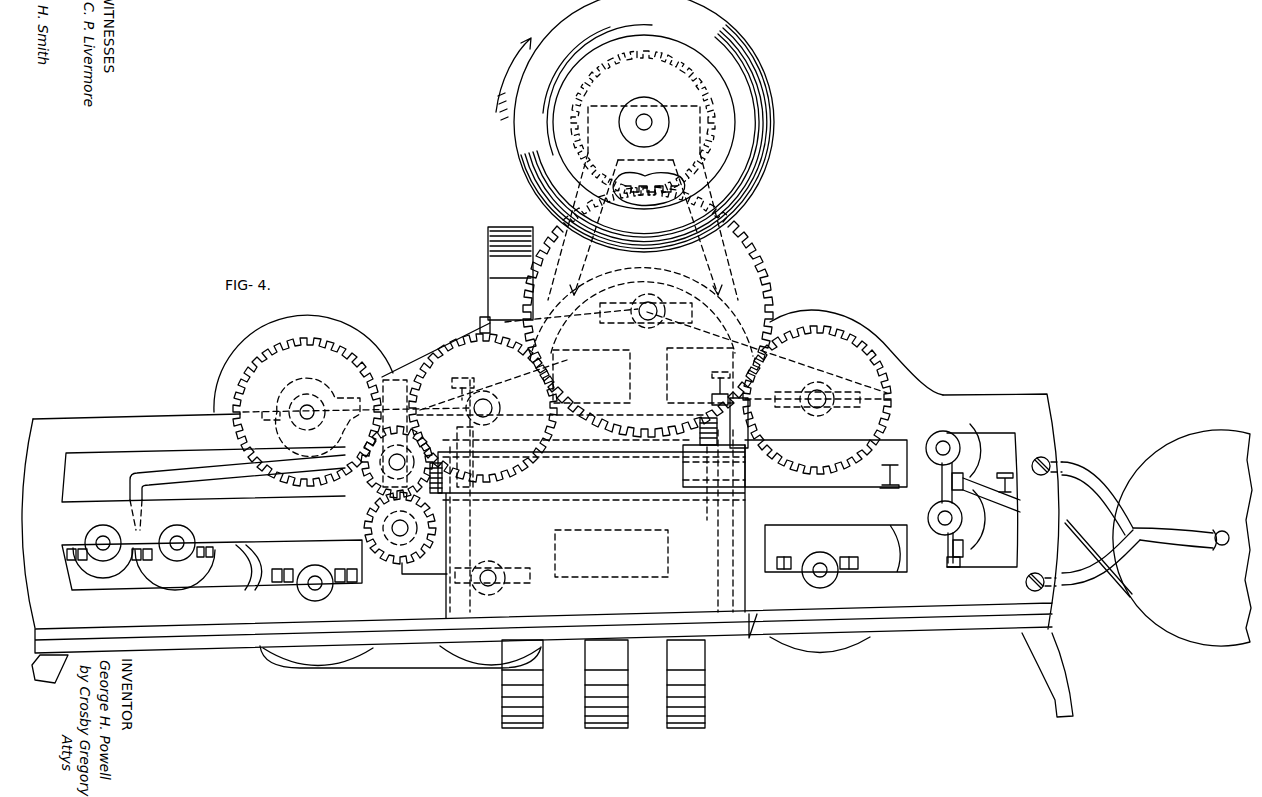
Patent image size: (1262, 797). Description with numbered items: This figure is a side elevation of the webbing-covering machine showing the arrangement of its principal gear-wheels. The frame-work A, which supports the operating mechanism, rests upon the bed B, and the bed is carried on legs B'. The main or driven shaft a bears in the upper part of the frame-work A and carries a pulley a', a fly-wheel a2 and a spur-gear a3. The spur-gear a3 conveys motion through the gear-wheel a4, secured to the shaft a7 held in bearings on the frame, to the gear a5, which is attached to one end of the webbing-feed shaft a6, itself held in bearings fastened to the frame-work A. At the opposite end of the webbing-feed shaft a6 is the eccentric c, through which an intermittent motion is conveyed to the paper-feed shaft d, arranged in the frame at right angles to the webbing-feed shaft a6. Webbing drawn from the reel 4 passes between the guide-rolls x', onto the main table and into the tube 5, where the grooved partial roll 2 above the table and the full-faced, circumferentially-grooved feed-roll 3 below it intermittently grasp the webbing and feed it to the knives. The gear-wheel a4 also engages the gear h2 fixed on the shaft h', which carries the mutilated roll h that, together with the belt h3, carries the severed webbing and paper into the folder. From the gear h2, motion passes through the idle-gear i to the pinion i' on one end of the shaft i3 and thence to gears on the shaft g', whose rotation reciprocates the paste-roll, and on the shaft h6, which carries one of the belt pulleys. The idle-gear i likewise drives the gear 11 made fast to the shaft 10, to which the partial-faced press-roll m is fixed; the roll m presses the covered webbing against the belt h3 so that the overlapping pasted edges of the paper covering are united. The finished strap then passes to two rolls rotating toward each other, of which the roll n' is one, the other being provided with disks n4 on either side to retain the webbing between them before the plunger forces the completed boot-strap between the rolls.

The main or driven shaft a is at (644, 125).
The pulley a' is at (635, 126).
The fly-wheel a2 is at (510, 263).
The spur-gear a3 is at (643, 55).
The gear-wheel a4 is at (770, 290).
The gear a5 is at (805, 396).
The webbing-feed shaft a6 is at (805, 405).
The shaft a7 is at (642, 318).
The partial roll 2 is at (843, 392).
The feed-roll 3 is at (820, 603).
The reel 4 is at (1157, 538).
The tube 5 is at (878, 482).
The shaft 10 is at (299, 407).
The gear 11 is at (356, 358).
The frame-work A is at (542, 468).
The bed B is at (543, 623).
The legs B' is at (555, 675).
The eccentric c is at (237, 490).
The paper-feed shaft d is at (603, 684).
The shaft g' is at (466, 586).
The mutilated roll h is at (436, 340).
The shaft h' is at (484, 401).
The gear h2 is at (483, 402).
The belt h3 is at (400, 667).
The shaft h6 is at (312, 586).
The idle-gear i is at (383, 469).
The pinion i' is at (377, 487).
The shaft i3 is at (393, 537).
The partial-faced roll m is at (303, 358).
The roll n' is at (103, 553).
The disks n4 is at (175, 557).
The guide-rolls x' is at (973, 495).